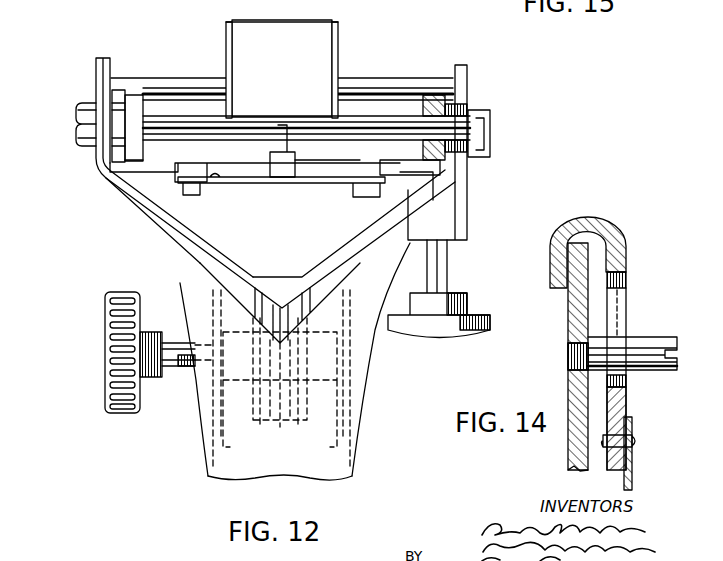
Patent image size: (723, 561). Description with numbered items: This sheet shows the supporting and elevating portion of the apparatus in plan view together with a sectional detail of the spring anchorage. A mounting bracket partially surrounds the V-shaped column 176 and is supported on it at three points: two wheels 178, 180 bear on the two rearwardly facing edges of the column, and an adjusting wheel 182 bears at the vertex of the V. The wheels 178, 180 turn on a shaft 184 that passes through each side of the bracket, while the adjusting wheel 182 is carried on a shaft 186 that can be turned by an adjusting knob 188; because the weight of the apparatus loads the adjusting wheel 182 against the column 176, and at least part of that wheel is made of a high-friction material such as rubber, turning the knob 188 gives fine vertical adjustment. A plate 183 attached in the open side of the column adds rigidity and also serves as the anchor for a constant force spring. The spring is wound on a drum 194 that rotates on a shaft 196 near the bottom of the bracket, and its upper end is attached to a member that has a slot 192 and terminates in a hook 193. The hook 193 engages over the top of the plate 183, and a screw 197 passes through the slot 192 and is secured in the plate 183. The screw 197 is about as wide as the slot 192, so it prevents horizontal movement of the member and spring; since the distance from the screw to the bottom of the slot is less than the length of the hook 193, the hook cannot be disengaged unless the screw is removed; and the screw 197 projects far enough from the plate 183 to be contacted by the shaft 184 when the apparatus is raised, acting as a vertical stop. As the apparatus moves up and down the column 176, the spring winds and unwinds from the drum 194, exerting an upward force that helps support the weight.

In FIG. 12, the V-shaped column 176 is at (210, 222).
In FIG. 12, the wheel 178 is at (133, 104).
In FIG. 12, the wheel 180 is at (431, 96).
In FIG. 12, the adjusting wheel 182 is at (333, 282).
In FIG. 12, the plate 183 is at (314, 178).
In FIG. 14, the plate 183 is at (578, 318).
In FIG. 12, the shaft 184 is at (352, 140).
In FIG. 12, the shaft 186 is at (183, 366).
In FIG. 12, the adjusting knob 188 is at (107, 333).
In FIG. 14, the slot 192 is at (624, 383).
In FIG. 12, the hook 193 is at (288, 180).
In FIG. 14, the hook 193 is at (550, 242).
In FIG. 12, the drum 194 is at (338, 52).
In FIG. 12, the shaft 196 is at (189, 82).
In FIG. 12, the screw 197 is at (288, 148).
In FIG. 14, the screw 197 is at (632, 347).